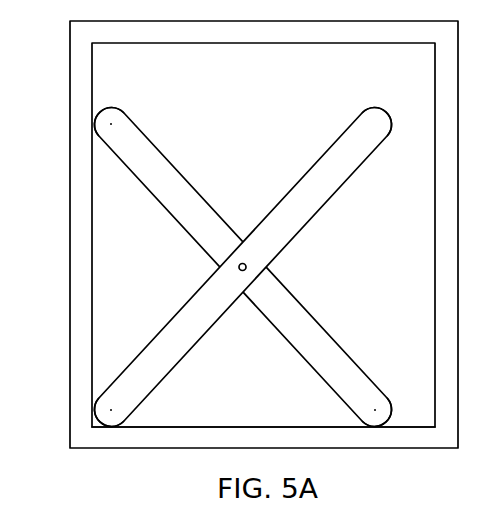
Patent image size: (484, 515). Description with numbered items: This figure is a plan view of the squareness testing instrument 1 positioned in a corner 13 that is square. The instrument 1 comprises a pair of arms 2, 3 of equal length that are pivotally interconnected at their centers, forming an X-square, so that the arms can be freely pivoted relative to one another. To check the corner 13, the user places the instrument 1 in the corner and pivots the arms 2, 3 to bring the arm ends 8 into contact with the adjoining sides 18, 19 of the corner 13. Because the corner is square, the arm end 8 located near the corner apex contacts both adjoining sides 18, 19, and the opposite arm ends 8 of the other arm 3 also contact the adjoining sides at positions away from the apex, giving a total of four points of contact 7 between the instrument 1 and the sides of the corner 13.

The squareness testing instrument 1 is at (243, 182).
The arm 2 is at (305, 225).
The arm 3 is at (311, 315).
The points of contact 7 is at (94, 121).
The arm ends 8 is at (118, 134).
The corner 13 is at (86, 431).
The adjoining side 18 is at (92, 322).
The adjoining side 19 is at (162, 428).